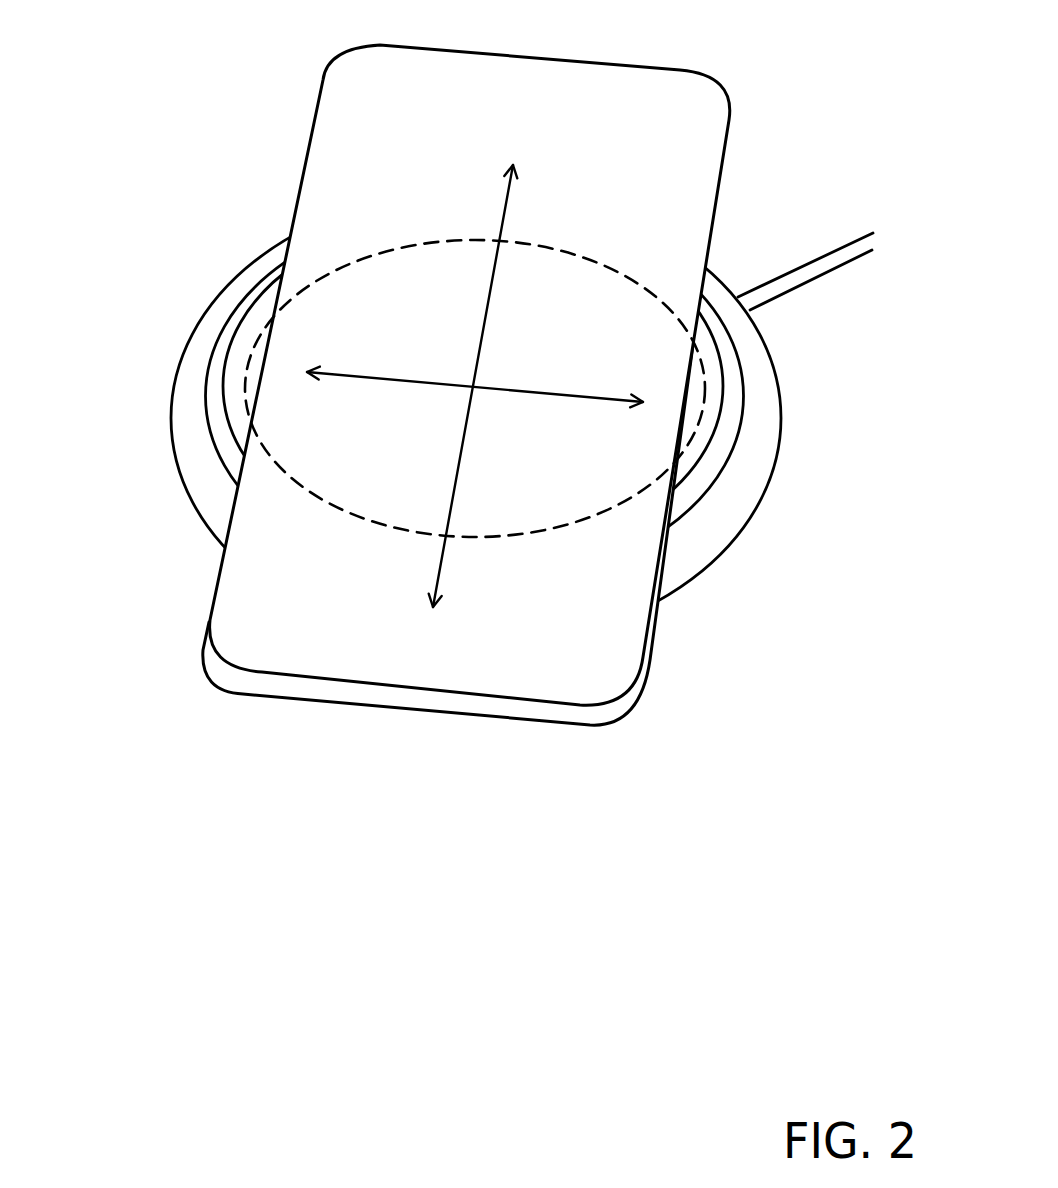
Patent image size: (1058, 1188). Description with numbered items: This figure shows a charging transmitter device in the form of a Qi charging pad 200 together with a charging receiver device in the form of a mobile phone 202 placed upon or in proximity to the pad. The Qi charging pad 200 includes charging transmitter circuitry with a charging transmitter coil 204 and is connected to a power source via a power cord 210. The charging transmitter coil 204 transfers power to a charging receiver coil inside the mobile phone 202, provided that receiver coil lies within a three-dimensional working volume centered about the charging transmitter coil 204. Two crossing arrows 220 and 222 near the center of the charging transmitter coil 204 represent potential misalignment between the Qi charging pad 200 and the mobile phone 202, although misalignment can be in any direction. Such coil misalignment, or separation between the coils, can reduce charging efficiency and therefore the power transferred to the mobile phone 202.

The Qi charging pad 200 is at (235, 270).
The mobile phone 202 is at (608, 727).
The charging transmitter coil 204 is at (253, 348).
The power cord 210 is at (823, 277).
The crossing arrow 220 is at (513, 320).
The crossing arrow 222 is at (425, 395).